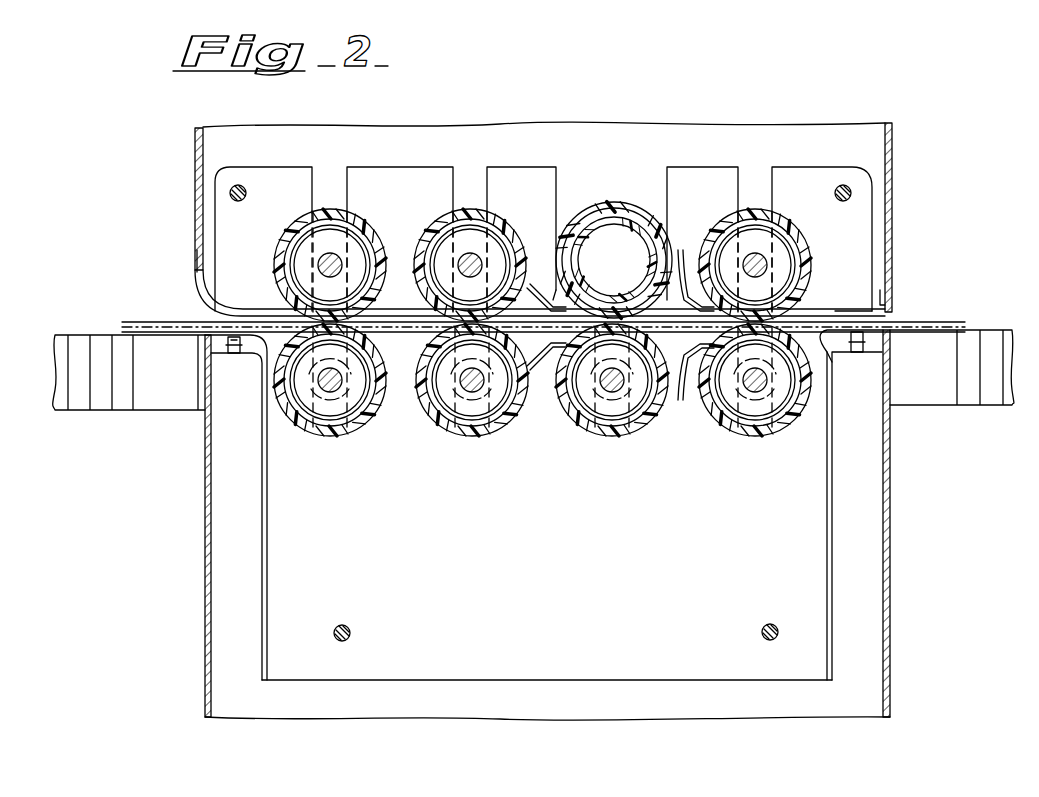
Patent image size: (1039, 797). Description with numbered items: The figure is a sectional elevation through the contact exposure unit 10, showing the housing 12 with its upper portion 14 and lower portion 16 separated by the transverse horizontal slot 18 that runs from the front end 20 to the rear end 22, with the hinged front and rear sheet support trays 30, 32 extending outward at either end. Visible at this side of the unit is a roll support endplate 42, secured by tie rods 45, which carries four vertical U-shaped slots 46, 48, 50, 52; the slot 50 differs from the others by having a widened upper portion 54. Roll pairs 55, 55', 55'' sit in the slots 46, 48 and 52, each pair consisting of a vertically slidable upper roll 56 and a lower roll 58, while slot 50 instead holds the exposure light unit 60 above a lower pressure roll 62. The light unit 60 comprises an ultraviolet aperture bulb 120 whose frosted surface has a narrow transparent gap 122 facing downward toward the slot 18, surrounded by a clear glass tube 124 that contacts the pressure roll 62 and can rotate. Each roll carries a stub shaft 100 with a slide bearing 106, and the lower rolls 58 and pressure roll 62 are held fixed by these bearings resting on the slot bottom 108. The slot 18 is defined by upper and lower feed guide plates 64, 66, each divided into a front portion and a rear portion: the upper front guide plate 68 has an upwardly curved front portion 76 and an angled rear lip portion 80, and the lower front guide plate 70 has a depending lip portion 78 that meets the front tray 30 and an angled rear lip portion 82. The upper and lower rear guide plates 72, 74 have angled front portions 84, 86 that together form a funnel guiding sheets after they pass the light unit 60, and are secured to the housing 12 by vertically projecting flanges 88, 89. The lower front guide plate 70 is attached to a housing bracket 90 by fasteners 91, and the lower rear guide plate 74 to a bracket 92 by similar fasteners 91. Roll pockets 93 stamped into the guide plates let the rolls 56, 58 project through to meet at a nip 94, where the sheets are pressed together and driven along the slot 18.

The contact exposure unit 10 is at (132, 163).
The housing 12 is at (189, 150).
The upper portion 14 is at (893, 130).
The lower portion 16 is at (890, 472).
The slot 18 is at (215, 322).
The front end 20 is at (196, 196).
The rear end 22 is at (893, 162).
The front sheet support tray 30 is at (90, 335).
The rear sheet support tray 32 is at (1005, 330).
The roll support endplate 42 is at (400, 557).
The tie rods 45 is at (844, 184).
The vertical U-shaped slot 46 is at (350, 183).
The vertical U-shaped slot 48 is at (490, 183).
The vertical U-shaped slot 50 is at (670, 183).
The vertical U-shaped slot 52 is at (775, 183).
The widened upper portion 54 is at (558, 205).
The roll pair 55 is at (306, 265).
The roll pair 55' is at (472, 405).
The last roll pair 55'' is at (751, 402).
The upper roll 56 is at (378, 237).
The lower roll 58 is at (300, 430).
The exposure light unit 60 is at (621, 204).
The lower pressure roll 62 is at (620, 425).
The upper feed guide plate 64 is at (199, 272).
The lower feed guide plate 66 is at (215, 326).
The upper front guide plate 68 is at (250, 308).
The lower front guide plate 70 is at (348, 424).
The upper rear guide plate 72 is at (835, 309).
The lower rear guide plate 74 is at (833, 354).
The upwardly curved front portion 76 is at (198, 292).
The depending lip portion 78 is at (233, 355).
The rear lip portion 80 is at (538, 288).
The rear lip portion 82 is at (546, 370).
The angled front portion 84 is at (680, 250).
The angled front portion 86 is at (686, 370).
The vertically projecting flange 88 is at (893, 292).
The vertically projecting flange 89 is at (884, 341).
The housing bracket 90 is at (268, 420).
The fasteners 91 is at (238, 355).
The bracket 92 is at (826, 400).
The roll pockets 93 is at (375, 311).
The nip 94 is at (650, 308).
The stub shaft 100 is at (470, 402).
The slide bearing 106 is at (640, 425).
The slot bottom 108 is at (492, 412).
The ultraviolet aperture bulb 120 is at (586, 240).
The transparent gap 122 is at (600, 298).
The glass tube 124 is at (656, 212).